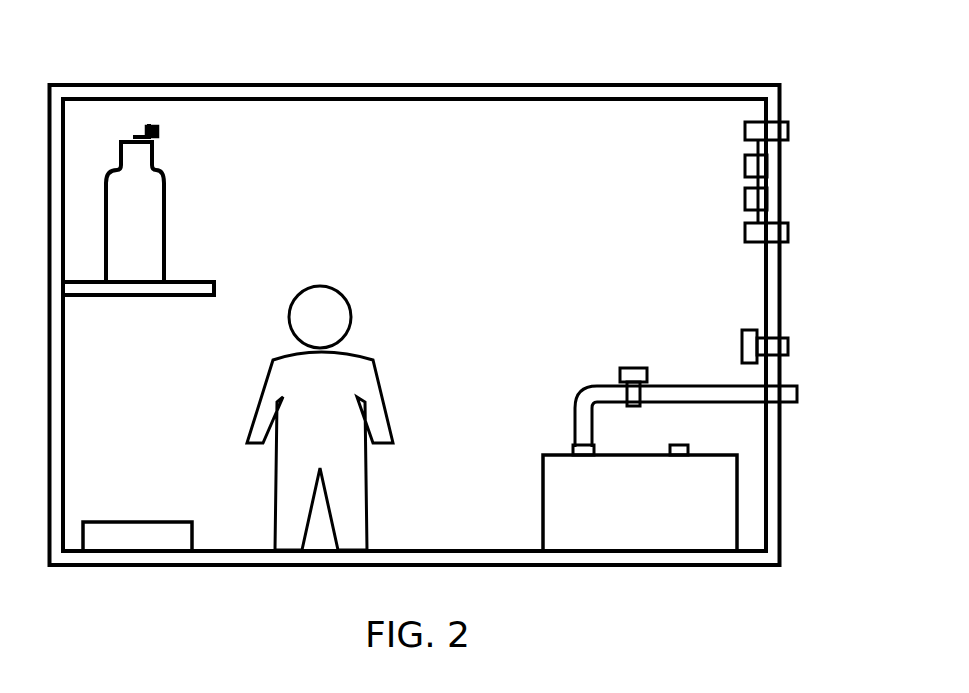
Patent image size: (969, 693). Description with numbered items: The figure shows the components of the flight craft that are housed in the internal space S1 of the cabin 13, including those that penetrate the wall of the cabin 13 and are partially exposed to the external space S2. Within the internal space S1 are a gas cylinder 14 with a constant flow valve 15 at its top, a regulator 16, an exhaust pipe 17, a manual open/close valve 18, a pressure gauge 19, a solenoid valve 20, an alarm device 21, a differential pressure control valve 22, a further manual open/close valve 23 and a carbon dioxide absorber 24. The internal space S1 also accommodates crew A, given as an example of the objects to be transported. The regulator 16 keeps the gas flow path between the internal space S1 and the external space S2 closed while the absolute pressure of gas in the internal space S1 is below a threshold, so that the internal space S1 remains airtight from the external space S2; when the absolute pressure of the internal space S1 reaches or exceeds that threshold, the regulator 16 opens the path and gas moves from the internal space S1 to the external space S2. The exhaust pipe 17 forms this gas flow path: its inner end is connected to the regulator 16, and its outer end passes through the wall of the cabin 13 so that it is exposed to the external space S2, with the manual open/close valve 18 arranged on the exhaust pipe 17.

The cabin 13 is at (643, 84).
The gas cylinder 14 is at (155, 238).
The constant flow valve 15 is at (158, 133).
The regulator 16 is at (543, 493).
The exhaust pipe 17 is at (588, 392).
The manual open/close valve 18 is at (630, 368).
The pressure gauge 19 is at (745, 203).
The solenoid valve 20 is at (745, 236).
The alarm device 21 is at (745, 170).
The differential pressure control valve 22 is at (745, 135).
The manual open/close valve 23 is at (742, 341).
The carbon dioxide absorber 24 is at (133, 532).
The crew A is at (352, 377).
The internal space S1 is at (507, 312).
The external space S2 is at (848, 314).